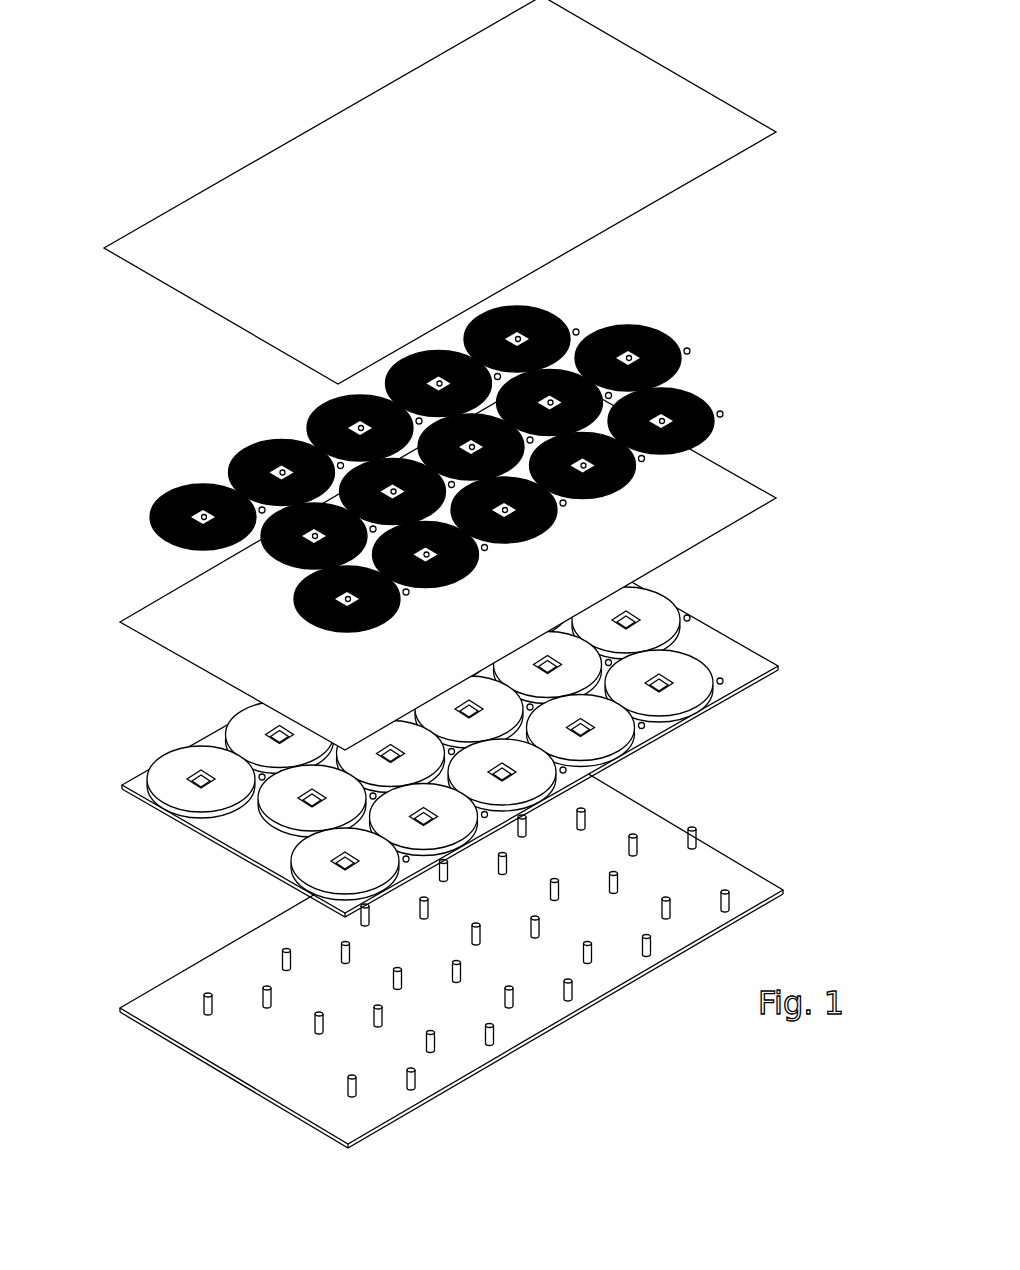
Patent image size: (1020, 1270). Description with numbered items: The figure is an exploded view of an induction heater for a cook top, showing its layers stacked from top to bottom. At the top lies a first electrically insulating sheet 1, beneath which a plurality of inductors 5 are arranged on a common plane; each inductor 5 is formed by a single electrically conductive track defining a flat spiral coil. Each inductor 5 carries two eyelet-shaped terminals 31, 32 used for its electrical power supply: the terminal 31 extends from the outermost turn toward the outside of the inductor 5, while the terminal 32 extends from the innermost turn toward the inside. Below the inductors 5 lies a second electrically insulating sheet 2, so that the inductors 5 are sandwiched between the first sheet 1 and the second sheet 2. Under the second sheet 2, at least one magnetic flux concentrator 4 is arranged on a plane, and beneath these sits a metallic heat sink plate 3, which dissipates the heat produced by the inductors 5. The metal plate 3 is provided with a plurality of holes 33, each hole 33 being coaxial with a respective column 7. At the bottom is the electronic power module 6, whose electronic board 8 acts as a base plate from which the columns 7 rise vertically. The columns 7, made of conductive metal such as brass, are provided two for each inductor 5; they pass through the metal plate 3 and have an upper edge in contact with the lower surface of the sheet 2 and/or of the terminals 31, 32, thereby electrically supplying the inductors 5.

The first electrically insulating sheet 1 is at (202, 220).
The second electrically insulating sheet 2 is at (158, 613).
The metallic heat sink plate 3 is at (135, 782).
The magnetic flux concentrator 4 is at (242, 732).
The inductor 5 is at (394, 445).
The electronic power module 6 is at (428, 574).
The column 7 is at (264, 985).
The electronic board 8 is at (153, 997).
The terminal 31 is at (689, 349).
The terminal 32 is at (617, 323).
The hole 33 is at (723, 682).